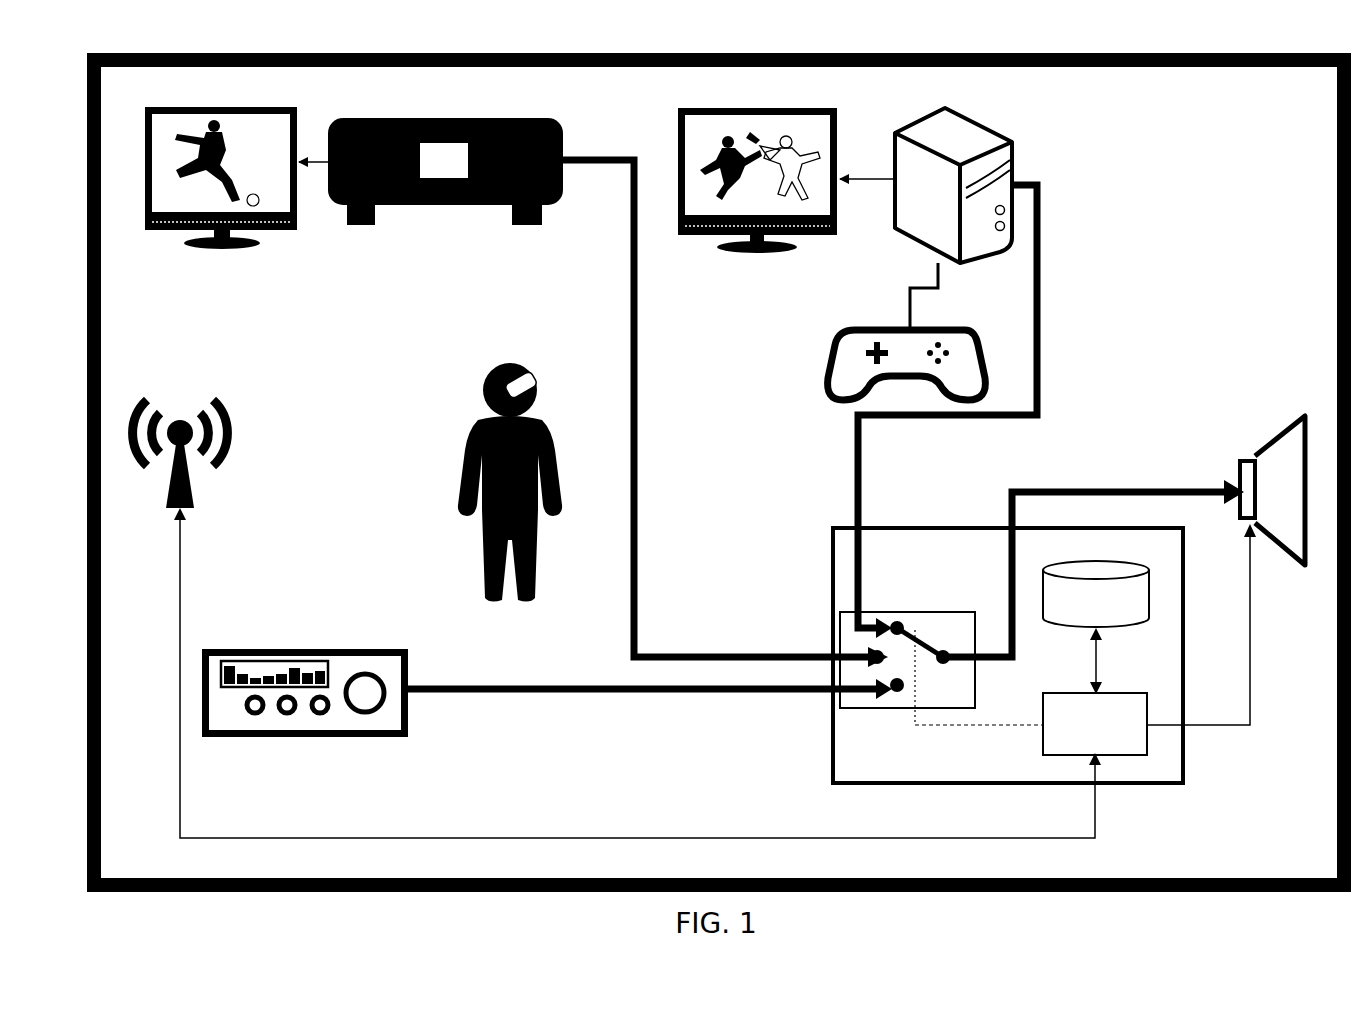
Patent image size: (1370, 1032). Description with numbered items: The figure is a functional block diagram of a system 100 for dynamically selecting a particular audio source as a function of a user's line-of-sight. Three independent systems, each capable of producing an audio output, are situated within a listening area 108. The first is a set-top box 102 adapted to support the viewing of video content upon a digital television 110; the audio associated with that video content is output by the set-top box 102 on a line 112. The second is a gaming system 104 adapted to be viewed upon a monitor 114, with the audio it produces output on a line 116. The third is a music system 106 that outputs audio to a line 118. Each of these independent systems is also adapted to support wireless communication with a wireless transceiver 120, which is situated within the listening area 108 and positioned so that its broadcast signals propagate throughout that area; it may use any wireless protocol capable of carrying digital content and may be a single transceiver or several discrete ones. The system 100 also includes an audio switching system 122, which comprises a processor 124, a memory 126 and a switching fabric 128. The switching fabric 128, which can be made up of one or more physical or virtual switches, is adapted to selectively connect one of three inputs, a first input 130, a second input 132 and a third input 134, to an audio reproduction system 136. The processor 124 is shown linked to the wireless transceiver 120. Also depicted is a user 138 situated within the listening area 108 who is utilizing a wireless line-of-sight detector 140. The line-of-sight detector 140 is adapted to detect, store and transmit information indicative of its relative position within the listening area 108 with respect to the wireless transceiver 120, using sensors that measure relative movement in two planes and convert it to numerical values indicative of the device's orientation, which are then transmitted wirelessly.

The system 100 is at (162, 40).
The listening area 108 is at (942, 56).
The digital television 110 is at (262, 232).
The set-top box 102 is at (470, 207).
The line 112 is at (637, 313).
The monitor 114 is at (676, 130).
The gaming system 104 is at (1015, 148).
The line 116 is at (1040, 298).
The user 138 is at (478, 432).
The wireless line-of-sight detector 140 is at (534, 380).
The wireless transceiver 120 is at (192, 500).
The music system 106 is at (325, 738).
The line 118 is at (553, 700).
The audio switching system 122 is at (1185, 758).
The second input 132 is at (872, 650).
The first input 130 is at (906, 624).
The third input 134 is at (897, 697).
The switching fabric 128 is at (1070, 572).
The memory 126 is at (1096, 627).
The processor 124 is at (1149, 644).
The audio reproduction system 136 is at (1289, 438).